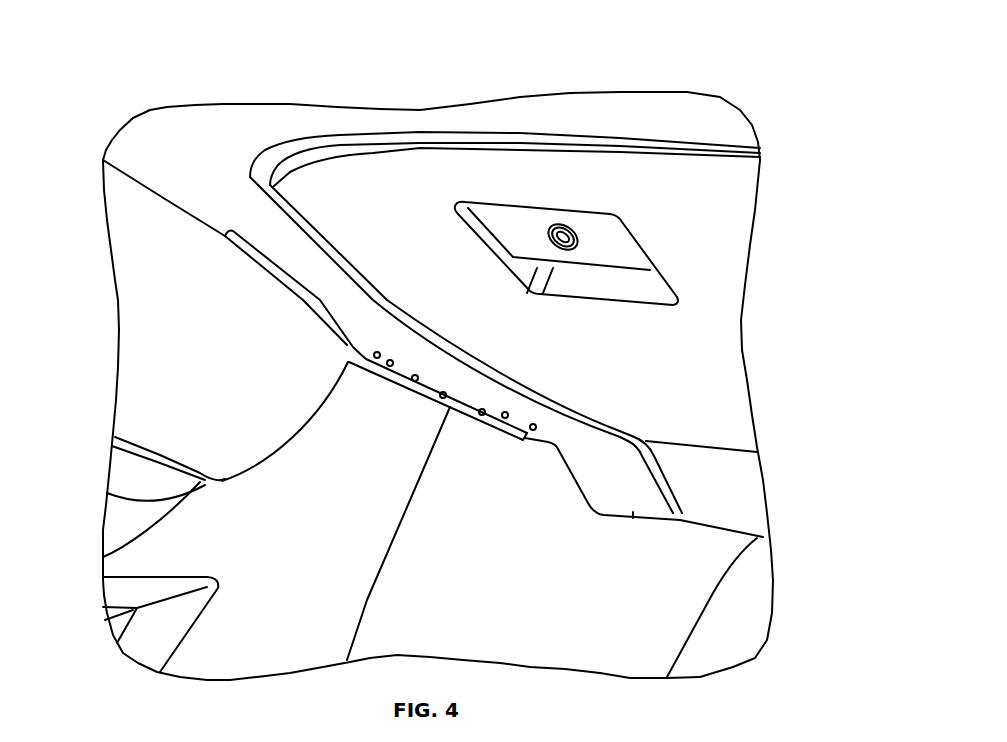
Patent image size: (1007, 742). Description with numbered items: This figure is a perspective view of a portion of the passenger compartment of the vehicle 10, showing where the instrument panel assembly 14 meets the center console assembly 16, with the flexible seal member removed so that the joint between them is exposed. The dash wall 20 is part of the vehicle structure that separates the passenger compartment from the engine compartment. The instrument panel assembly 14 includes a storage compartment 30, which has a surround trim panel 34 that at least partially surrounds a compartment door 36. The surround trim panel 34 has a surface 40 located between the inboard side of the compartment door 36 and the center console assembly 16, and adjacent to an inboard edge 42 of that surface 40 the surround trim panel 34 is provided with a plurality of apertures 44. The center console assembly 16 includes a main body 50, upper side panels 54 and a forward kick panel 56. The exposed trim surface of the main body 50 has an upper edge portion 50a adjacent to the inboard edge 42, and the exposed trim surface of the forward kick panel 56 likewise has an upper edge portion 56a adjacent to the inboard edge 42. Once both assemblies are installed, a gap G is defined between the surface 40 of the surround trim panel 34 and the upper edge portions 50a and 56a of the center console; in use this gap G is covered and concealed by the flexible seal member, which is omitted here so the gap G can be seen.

The vehicle 10 is at (654, 53).
The instrument panel assembly 14 is at (337, 107).
The center console assembly 16 is at (118, 366).
The dash wall 20 is at (738, 610).
The storage compartment 30 is at (455, 108).
The surround trim panel 34 is at (215, 152).
The compartment door 36 is at (650, 185).
The surface 40 is at (322, 284).
The inboard edge 42 is at (397, 385).
The apertures 44 is at (442, 392).
The main body 50 is at (170, 554).
The upper edge portion 50a is at (422, 423).
The upper side panels 54 is at (173, 283).
The forward kick panel 56 is at (565, 628).
The upper edge portion 56a is at (519, 462).
The gap G is at (372, 371).